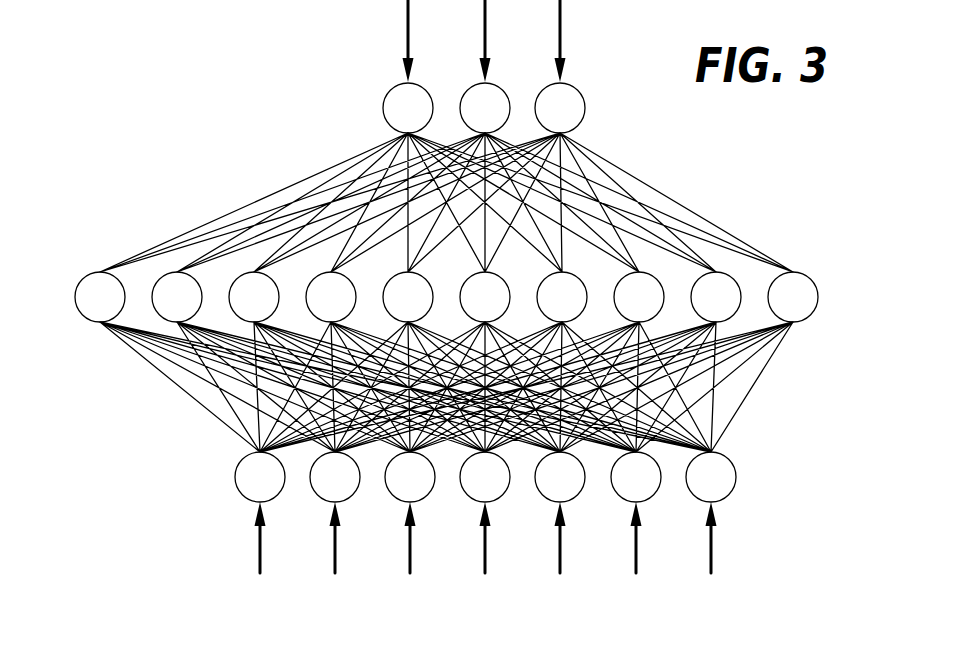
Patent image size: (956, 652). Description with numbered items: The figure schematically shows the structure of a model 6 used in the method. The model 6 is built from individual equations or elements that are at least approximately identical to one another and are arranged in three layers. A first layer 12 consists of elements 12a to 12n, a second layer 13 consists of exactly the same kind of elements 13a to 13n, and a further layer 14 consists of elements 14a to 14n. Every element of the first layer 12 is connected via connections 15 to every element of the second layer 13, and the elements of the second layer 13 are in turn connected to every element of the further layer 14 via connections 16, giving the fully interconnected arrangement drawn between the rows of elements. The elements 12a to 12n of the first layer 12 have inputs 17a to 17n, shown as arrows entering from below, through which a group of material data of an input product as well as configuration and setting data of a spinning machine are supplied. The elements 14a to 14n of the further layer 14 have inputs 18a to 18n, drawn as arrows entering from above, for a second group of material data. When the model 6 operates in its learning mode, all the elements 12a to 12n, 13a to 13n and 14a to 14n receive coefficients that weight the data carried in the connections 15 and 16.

The model 6 is at (754, 174).
The first layer 12 is at (501, 486).
The element of the first layer 12a is at (235, 477).
The element of the first layer 12n is at (736, 490).
The second layer 13 is at (465, 295).
The element of the second layer 13a is at (82, 279).
The element of the second layer 13n is at (815, 282).
The further layer 14 is at (506, 113).
The element of the further layer 14a is at (383, 108).
The element of the further layer 14n is at (585, 108).
The connections 15 is at (784, 411).
The connections 16 is at (226, 194).
The input 17a is at (260, 548).
The input 17n is at (713, 560).
The input 18a is at (408, 35).
The input 18n is at (560, 27).